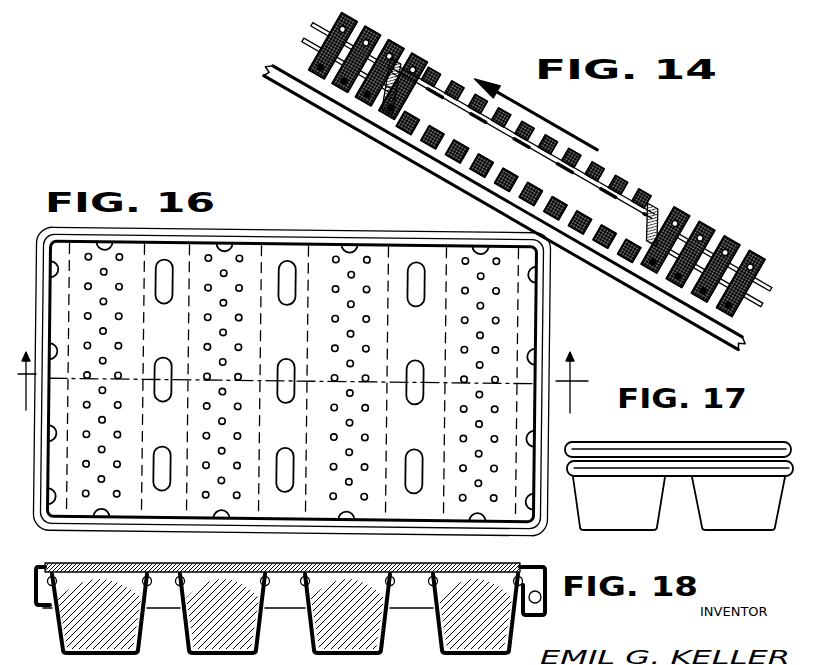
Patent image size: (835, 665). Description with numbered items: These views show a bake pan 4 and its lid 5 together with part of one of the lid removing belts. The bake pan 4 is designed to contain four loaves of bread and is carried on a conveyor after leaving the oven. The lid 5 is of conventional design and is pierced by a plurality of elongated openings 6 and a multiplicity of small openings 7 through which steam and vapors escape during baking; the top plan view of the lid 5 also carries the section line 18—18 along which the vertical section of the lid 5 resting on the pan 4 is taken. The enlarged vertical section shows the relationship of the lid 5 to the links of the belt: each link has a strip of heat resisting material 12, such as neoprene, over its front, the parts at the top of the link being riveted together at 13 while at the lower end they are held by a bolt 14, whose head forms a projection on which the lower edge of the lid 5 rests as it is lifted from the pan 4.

In FIG. 16, the bake pan 4 is at (249, 274).
In FIG. 17, the bake pan 4 is at (613, 454).
In FIG. 18, the bake pan 4 is at (56, 638).
In FIG. 14, the lid 5 is at (617, 182).
In FIG. 16, the lid 5 is at (378, 250).
In FIG. 18, the lid 5 is at (481, 571).
In FIG. 14, the elongated opening 6 is at (456, 86).
In FIG. 16, the elongated opening 6 is at (278, 458).
In FIG. 18, the elongated opening 6 is at (162, 571).
In FIG. 16, the small opening 7 is at (346, 306).
In FIG. 14, the strip of heat resisting material 12 is at (735, 240).
In FIG. 14, the rivet 13 is at (393, 47).
In FIG. 14, the bolt 14 is at (358, 78).
In FIG. 16, the section line 18— 18 is at (302, 369).